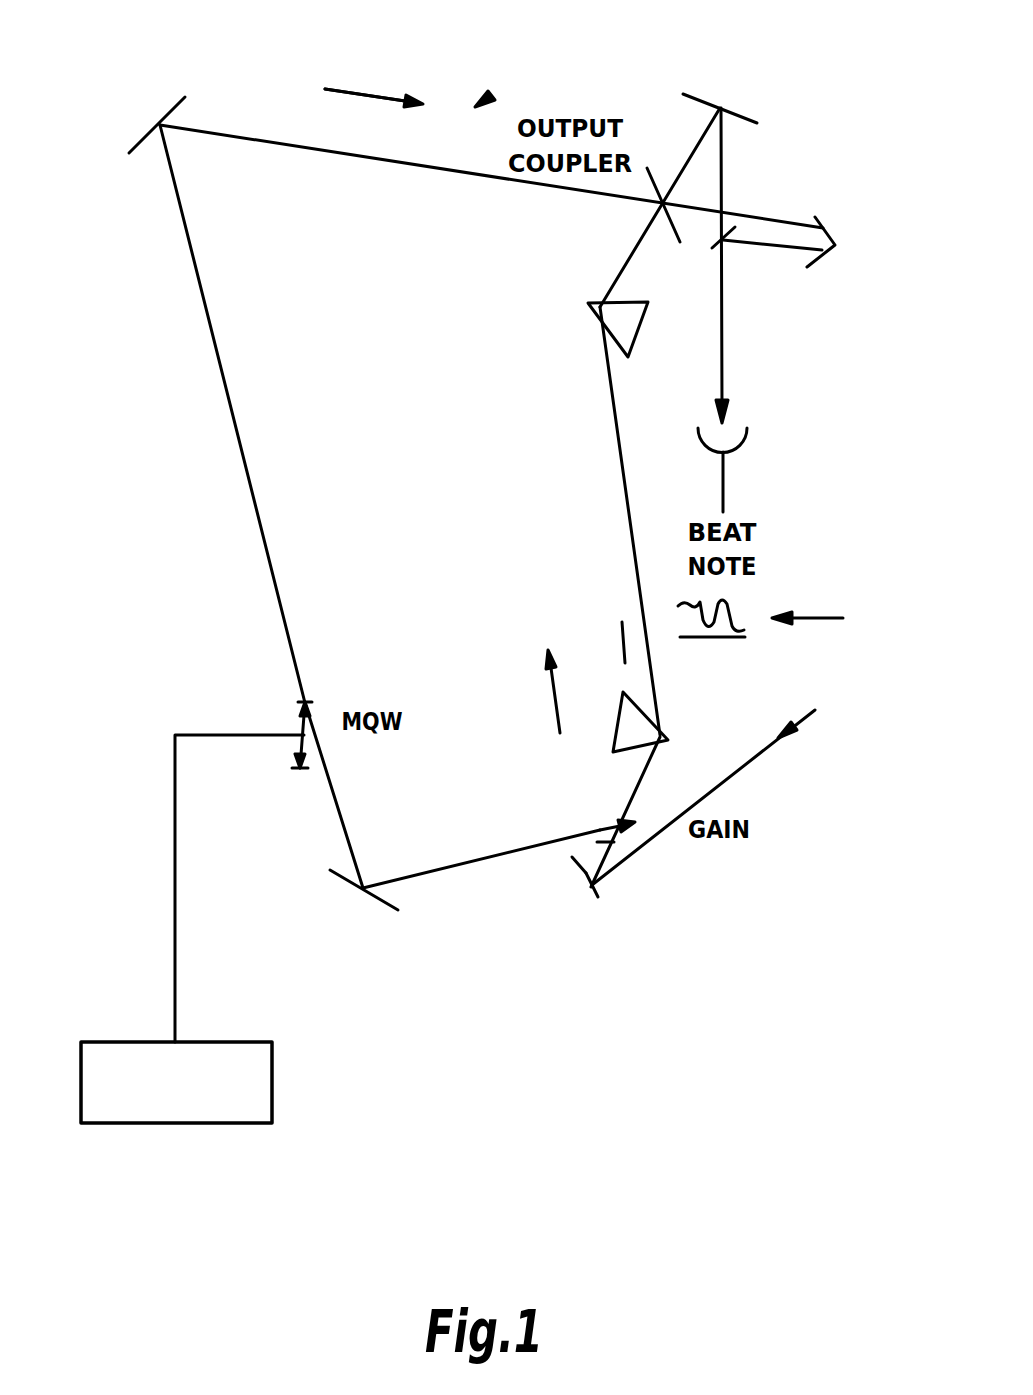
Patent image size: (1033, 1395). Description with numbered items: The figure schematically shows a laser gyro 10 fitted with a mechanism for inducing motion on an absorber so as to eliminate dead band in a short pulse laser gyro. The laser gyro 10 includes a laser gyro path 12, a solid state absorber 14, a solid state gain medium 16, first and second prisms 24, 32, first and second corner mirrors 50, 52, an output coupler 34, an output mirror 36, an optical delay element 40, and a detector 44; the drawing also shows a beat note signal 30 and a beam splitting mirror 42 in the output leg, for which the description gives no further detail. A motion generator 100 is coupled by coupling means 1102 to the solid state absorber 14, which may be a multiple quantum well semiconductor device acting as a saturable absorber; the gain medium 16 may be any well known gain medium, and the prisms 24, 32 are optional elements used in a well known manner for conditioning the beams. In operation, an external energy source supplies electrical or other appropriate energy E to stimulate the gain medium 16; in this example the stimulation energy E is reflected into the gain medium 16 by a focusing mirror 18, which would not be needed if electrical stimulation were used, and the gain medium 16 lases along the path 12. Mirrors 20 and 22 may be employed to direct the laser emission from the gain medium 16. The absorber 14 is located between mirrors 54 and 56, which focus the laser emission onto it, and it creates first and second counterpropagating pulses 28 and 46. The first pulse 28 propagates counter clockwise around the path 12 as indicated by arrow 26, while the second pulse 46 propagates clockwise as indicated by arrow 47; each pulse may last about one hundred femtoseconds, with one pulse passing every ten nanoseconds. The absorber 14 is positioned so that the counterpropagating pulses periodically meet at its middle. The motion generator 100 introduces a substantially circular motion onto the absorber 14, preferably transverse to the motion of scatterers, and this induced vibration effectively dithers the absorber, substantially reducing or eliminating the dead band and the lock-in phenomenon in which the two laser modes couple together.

The laser gyro 10 is at (480, 103).
The laser gyro path 12 is at (210, 368).
The solid state absorber 14 is at (305, 740).
The solid state gain medium 16 is at (630, 870).
The focusing mirror 18 is at (596, 897).
The mirror 20 is at (573, 855).
The mirror 22 is at (635, 830).
The first prism 24 is at (615, 750).
The arrow 26 is at (555, 705).
The first pulse 28 is at (617, 650).
The beat note signal 30 is at (733, 612).
The second prism 32 is at (628, 355).
The output coupler 34 is at (647, 170).
The output mirror 36 is at (690, 90).
The optical delay element 40 is at (815, 218).
The beam splitter mirror 42 is at (713, 243).
The detector 44 is at (747, 428).
The second pulse 46 is at (333, 128).
The arrow 47 is at (380, 93).
The first corner mirror 50 is at (170, 105).
The second corner mirror 52 is at (390, 912).
The mirror 54 is at (306, 704).
The mirror 56 is at (295, 770).
The motion generator 100 is at (208, 1124).
The coupling means 1102 is at (175, 893).
The stimulation energy E is at (740, 770).